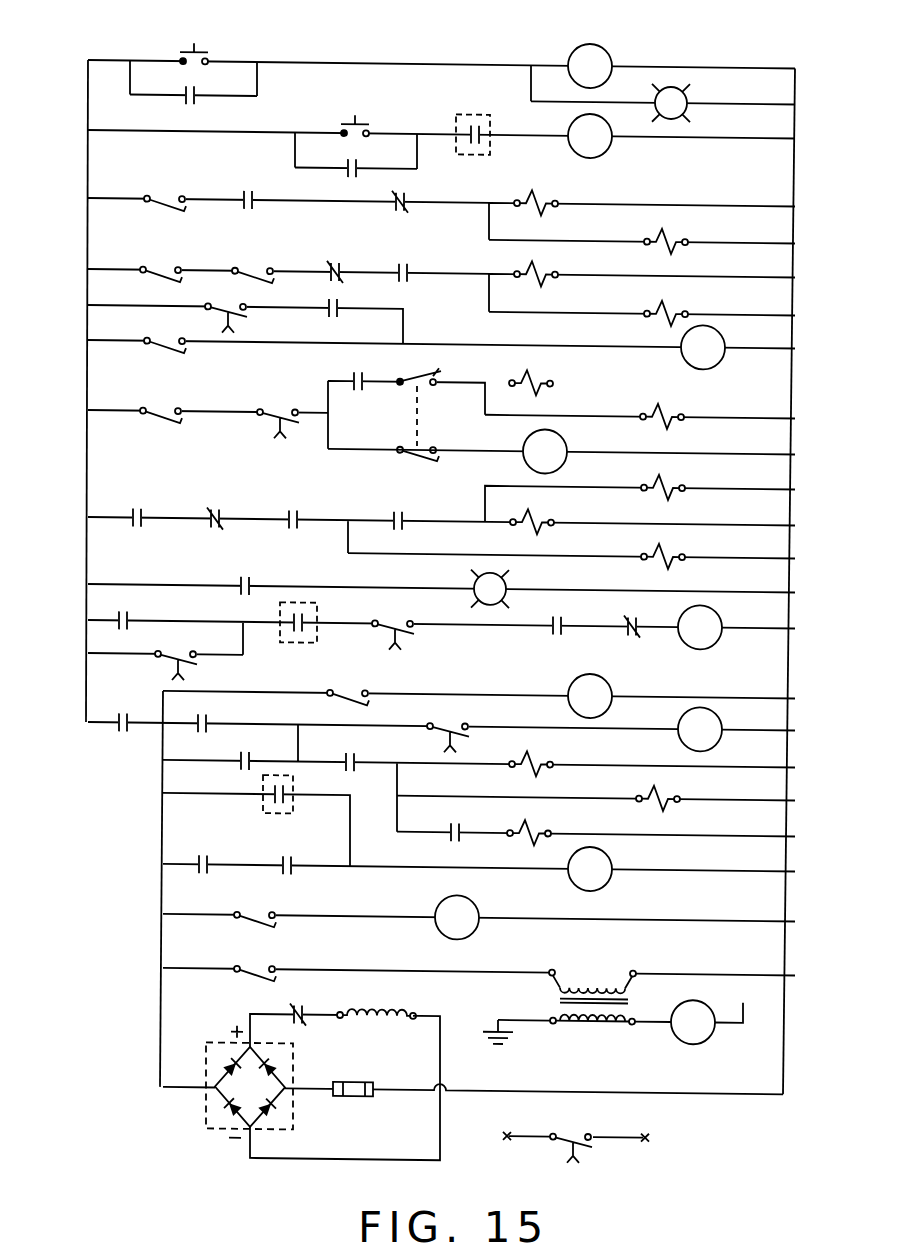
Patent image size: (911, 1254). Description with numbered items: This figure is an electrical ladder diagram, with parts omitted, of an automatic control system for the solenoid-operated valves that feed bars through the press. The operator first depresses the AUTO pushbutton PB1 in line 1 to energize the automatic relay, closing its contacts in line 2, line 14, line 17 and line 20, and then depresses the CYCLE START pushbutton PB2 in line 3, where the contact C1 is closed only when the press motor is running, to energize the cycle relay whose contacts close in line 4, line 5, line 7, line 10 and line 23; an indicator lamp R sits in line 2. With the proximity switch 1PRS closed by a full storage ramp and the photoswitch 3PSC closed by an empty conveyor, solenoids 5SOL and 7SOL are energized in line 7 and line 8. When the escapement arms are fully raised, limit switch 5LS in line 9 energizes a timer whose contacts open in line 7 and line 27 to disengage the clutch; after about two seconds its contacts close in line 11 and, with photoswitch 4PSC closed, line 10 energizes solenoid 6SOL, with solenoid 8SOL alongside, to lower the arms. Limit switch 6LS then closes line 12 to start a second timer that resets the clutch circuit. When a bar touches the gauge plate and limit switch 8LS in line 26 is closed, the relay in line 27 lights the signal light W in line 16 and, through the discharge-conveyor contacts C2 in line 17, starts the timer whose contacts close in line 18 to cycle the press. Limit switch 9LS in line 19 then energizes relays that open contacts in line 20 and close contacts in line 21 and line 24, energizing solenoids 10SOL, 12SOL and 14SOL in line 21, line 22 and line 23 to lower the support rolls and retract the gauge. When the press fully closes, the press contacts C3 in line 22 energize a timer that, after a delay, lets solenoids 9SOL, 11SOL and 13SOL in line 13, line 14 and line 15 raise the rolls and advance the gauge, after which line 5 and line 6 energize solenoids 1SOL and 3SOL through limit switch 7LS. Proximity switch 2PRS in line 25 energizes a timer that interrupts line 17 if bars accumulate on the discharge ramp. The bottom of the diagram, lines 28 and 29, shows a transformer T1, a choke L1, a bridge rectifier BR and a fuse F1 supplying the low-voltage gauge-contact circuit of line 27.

The line 1 is at (426, 67).
The line 2 is at (426, 99).
The line 3 is at (426, 134).
The line 4 is at (237, 162).
The line 5 is at (426, 209).
The line 6 is at (426, 234).
The line 7 is at (426, 279).
The line 8 is at (426, 314).
The line 9 is at (426, 343).
The line 10 is at (325, 415).
The line 11 is at (423, 414).
The line 12 is at (423, 450).
The line 13 is at (423, 492).
The line 14 is at (423, 525).
The line 15 is at (423, 549).
The line 16 is at (423, 585).
The line 17 is at (423, 628).
The line 18 is at (147, 654).
The line 19 is at (423, 692).
The line 20 is at (423, 726).
The line 21 is at (423, 779).
The line 22 is at (423, 820).
The line 23 is at (423, 825).
The line 24 is at (423, 865).
The line 25 is at (423, 915).
The line 26 is at (423, 994).
The line 27 is at (245, 1073).
The line 28 is at (417, 1084).
The line 29 is at (423, 1136).
The AUTO pushbutton PB1 is at (191, 48).
The CYCLE START pushbutton PB2 is at (351, 117).
The signal light R is at (671, 103).
The contact C1 is at (484, 137).
The limit switch 7LS is at (165, 193).
The solenoid 1SOL is at (556, 198).
The solenoid 3SOL is at (686, 237).
The proximity switch 1PRS is at (160, 264).
The photoswitch 3PSC is at (250, 265).
The solenoid 5SOL is at (556, 269).
The solenoid 7SOL is at (686, 309).
The limit switch 5LS is at (165, 335).
The photoswitch 4PSC is at (160, 405).
The limit switch 6LS is at (419, 423).
The solenoid 6SOL is at (554, 378).
The solenoid 8SOL is at (684, 412).
The solenoid 9SOL is at (685, 483).
The solenoid 11SOL is at (559, 518).
The solenoid 13SOL is at (690, 552).
The signal light W is at (490, 589).
The contacts C2 is at (310, 625).
The limit switch 9LS is at (348, 686).
The solenoid 10SOL is at (557, 760).
The solenoid 12SOL is at (691, 793).
The solenoid 14SOL is at (557, 828).
The proximity switch 2PRS is at (255, 908).
The limit switch 8LS is at (255, 962).
The contacts C3 is at (290, 797).
The transformer 115V/6V T1 is at (577, 999).
The inductor L1 is at (376, 1014).
The bridge rectifier BR is at (249, 1081).
The fuse F1 is at (353, 1089).